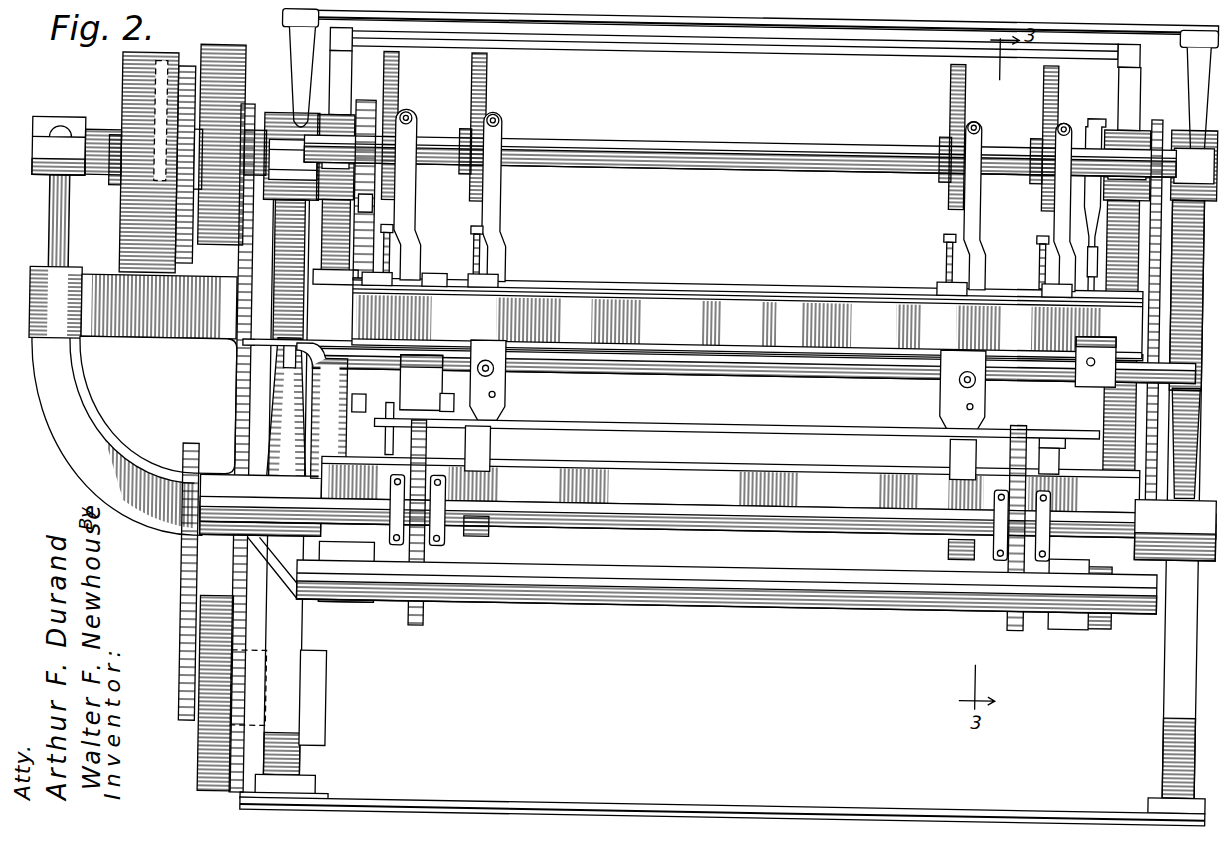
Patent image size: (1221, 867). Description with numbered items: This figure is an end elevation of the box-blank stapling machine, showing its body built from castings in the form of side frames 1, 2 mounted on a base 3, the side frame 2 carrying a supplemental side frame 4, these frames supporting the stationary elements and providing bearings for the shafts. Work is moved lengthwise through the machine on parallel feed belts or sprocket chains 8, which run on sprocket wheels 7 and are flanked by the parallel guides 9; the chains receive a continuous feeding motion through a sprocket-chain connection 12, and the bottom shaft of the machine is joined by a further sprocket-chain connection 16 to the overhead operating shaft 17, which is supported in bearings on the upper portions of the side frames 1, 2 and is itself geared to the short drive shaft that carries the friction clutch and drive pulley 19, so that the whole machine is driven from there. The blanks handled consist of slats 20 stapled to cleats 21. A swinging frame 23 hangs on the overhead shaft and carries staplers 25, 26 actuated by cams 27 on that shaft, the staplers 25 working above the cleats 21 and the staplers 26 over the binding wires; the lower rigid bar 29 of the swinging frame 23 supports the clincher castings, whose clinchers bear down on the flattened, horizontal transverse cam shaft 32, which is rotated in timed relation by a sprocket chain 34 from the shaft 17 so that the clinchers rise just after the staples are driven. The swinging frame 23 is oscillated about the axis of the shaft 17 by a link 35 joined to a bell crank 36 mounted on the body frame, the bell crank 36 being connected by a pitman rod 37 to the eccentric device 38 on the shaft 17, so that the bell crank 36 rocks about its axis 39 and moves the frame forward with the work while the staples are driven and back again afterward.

The side frame 1 is at (744, 411).
The side frame 2 is at (287, 252).
The base 3 is at (490, 809).
The supplemental side frame 4 is at (133, 303).
The sprocket wheels 7 is at (440, 537).
The sprocket chains 8 is at (428, 451).
The parallel guides 9 is at (1044, 466).
The sprocket-chain connection 12 is at (198, 574).
The sprocket-chain connection 16 is at (236, 364).
The overhead operating shaft 17 is at (658, 150).
The friction clutch and drive pulley 19 is at (130, 224).
The slats 20 is at (627, 426).
The cleats 21 is at (347, 427).
The swinging frame 23 is at (268, 426).
The staplers 25 is at (405, 220).
The staplers 26 is at (493, 205).
The cams 27 is at (473, 97).
The lower rigid bar 29 is at (708, 496).
The cam shaft 32 is at (731, 245).
The sprocket chain 34 is at (1148, 225).
The link 35 is at (397, 596).
The bell crank 36 is at (362, 593).
The pitman rod 37 is at (1080, 243).
The eccentric device 38 is at (1095, 118).
The axis 39 is at (726, 587).